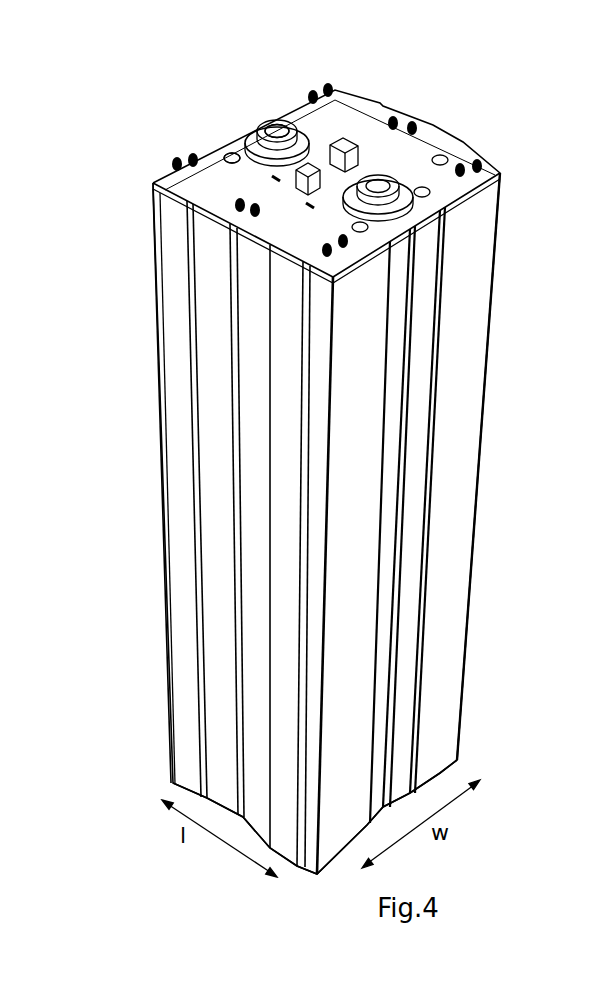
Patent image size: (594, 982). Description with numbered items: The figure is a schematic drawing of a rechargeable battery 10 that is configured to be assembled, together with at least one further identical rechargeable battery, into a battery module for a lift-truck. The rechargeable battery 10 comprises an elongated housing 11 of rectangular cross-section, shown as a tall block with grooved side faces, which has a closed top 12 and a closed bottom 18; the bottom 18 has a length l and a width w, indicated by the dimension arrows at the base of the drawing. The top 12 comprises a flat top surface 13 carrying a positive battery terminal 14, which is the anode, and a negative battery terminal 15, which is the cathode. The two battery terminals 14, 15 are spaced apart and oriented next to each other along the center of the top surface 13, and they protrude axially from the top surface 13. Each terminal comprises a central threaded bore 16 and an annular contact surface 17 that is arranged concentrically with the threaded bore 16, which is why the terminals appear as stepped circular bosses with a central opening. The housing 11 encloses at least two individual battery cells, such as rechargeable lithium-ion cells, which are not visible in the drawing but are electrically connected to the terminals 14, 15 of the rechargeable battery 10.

The rechargeable battery 10 is at (310, 438).
The housing 11 is at (208, 408).
The top 12 is at (401, 85).
The top surface 13 is at (346, 105).
The positive battery terminal 14 is at (271, 110).
The negative battery terminal 15 is at (420, 185).
The threaded bore 16 is at (257, 116).
The annular contact surface 17 is at (233, 137).
The bottom 18 is at (443, 780).